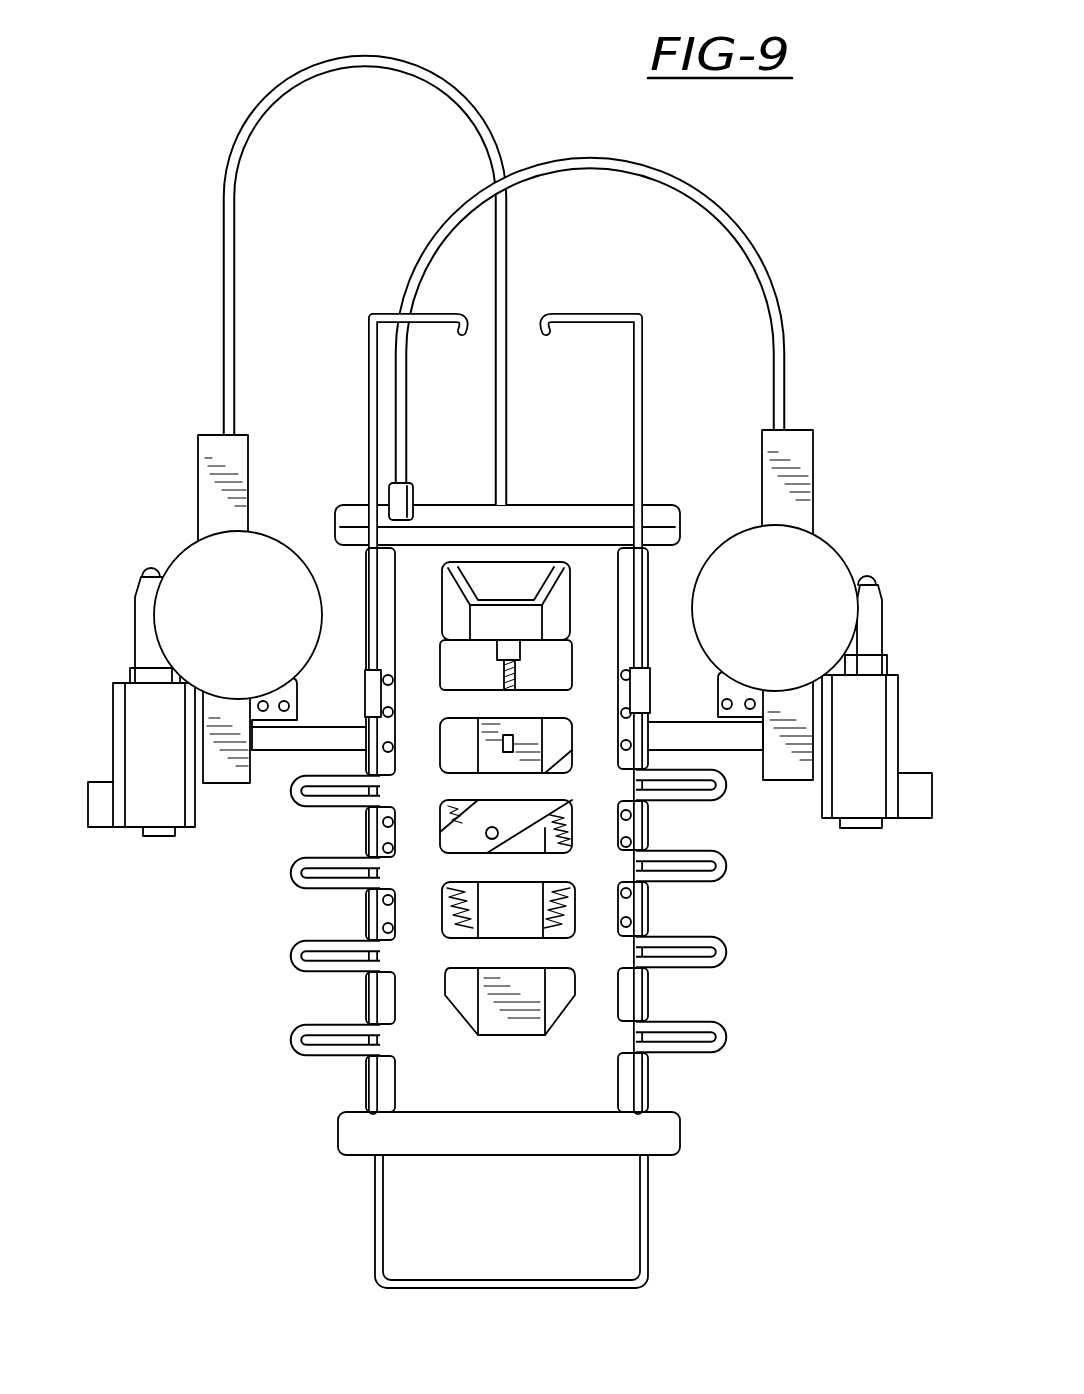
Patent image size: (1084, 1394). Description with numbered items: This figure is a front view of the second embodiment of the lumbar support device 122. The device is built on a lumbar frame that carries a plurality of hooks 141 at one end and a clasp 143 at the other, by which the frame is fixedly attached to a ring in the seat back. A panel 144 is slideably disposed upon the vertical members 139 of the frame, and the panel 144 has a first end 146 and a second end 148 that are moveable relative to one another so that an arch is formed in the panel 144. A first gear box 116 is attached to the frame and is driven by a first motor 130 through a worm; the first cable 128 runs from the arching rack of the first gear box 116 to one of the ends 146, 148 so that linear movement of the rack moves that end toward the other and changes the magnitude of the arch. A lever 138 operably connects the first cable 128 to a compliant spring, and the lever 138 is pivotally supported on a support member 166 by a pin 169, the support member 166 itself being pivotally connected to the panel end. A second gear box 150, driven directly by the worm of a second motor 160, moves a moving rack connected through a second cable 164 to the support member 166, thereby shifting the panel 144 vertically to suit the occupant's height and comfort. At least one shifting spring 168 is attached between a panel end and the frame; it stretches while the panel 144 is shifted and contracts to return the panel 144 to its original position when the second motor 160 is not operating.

The lumbar support device 122 is at (190, 97).
The second cable 164 is at (225, 268).
The first cable 128 is at (786, 322).
The hooks 141 is at (368, 320).
The vertical members 139 is at (645, 372).
The first end 146 is at (662, 512).
The second gear box 150 is at (208, 507).
The first gear box 116 is at (814, 521).
The second motor 160 is at (113, 705).
The first motor 130 is at (893, 700).
The lever 138 is at (486, 833).
The pin 169 is at (403, 866).
The shifting spring 168 is at (576, 898).
The support member 166 is at (518, 1020).
The panel 144 is at (330, 1040).
The second end 148 is at (355, 1150).
The clasp 143 is at (648, 1212).